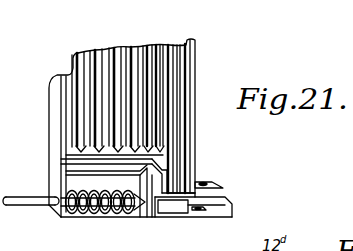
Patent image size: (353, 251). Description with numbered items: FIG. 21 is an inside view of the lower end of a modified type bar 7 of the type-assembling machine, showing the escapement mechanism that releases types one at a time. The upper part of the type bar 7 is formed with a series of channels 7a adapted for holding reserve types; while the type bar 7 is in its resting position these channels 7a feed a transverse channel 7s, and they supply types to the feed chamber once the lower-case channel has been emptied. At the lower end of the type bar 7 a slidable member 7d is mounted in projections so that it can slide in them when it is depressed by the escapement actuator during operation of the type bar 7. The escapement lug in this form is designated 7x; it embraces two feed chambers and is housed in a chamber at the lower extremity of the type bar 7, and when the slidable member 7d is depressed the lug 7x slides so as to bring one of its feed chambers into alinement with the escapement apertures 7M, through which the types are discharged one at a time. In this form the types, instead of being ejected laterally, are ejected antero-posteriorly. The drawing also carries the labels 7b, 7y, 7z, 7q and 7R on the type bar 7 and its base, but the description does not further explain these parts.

The type bar 7 is at (49, 119).
The channels 7a is at (92, 51).
The fin 7b is at (140, 49).
The fin 7y is at (163, 46).
The end fin 7z is at (182, 43).
The plate 7q is at (72, 154).
The transverse channel 7s is at (158, 215).
The slidable member 7d is at (22, 198).
The lug 7x is at (182, 226).
The apertures 7M is at (199, 206).
The base plate 7R is at (228, 194).